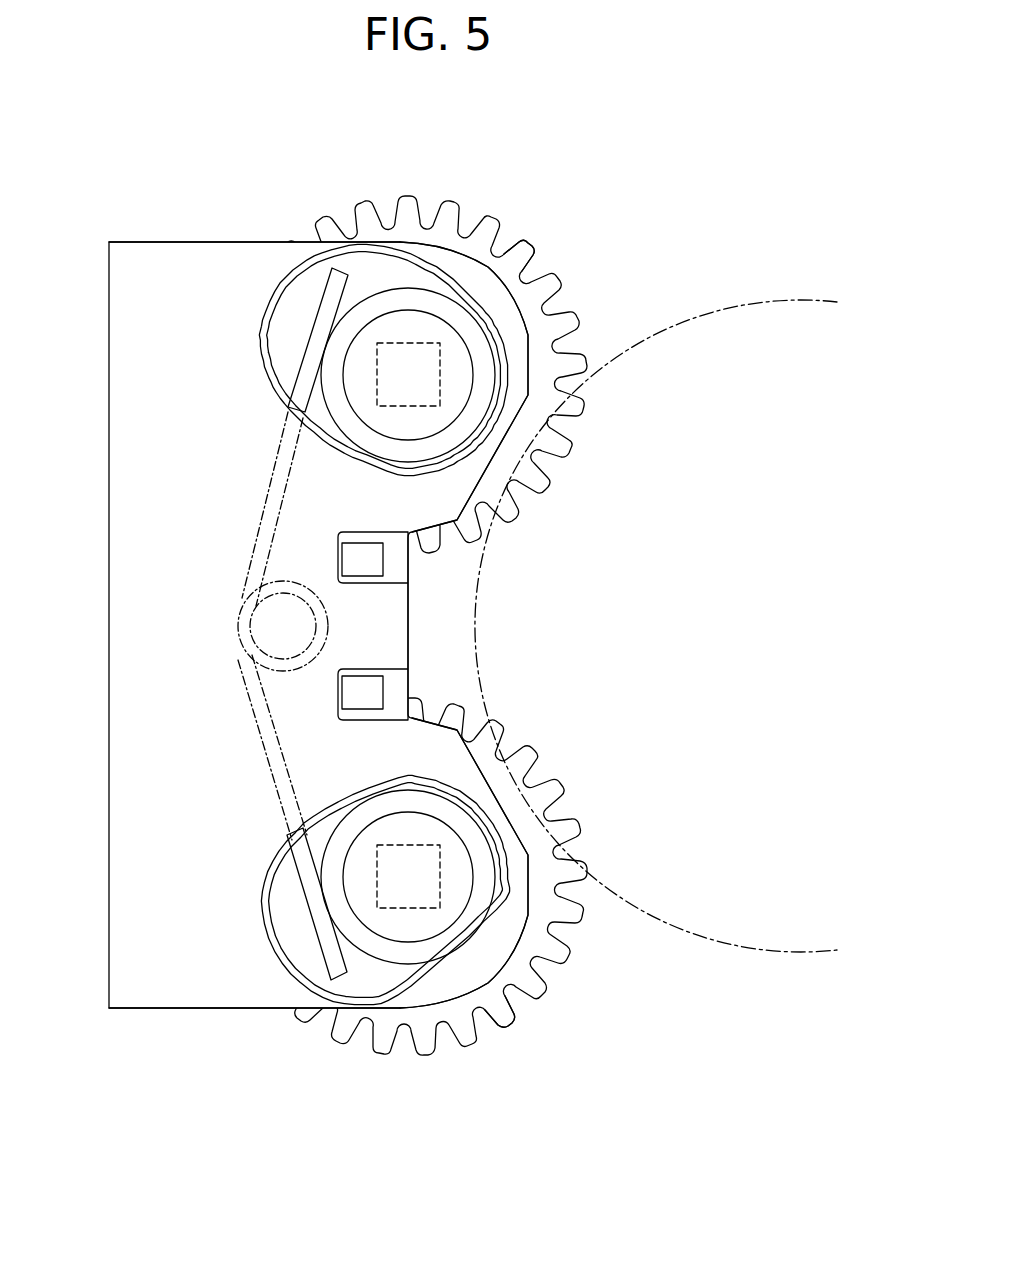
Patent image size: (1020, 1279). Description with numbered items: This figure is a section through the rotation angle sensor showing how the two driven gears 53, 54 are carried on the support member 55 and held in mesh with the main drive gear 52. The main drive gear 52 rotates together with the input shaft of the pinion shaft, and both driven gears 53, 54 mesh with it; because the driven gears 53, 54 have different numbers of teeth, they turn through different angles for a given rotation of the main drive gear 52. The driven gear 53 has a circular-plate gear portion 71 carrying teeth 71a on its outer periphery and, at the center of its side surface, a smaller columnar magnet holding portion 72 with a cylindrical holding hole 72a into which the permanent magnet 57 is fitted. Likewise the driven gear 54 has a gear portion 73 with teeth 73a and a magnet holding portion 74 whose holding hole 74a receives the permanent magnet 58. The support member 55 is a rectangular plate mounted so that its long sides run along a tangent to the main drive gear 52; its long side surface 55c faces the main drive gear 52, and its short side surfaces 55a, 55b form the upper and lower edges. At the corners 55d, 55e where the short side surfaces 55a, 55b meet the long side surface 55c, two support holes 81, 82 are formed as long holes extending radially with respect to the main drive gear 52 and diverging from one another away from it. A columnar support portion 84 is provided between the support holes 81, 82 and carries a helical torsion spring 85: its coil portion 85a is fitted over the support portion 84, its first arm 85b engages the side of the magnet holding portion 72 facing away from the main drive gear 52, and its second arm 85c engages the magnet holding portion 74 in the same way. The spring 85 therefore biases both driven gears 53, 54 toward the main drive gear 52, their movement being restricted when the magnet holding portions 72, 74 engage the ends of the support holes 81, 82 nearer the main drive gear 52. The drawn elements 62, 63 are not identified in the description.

The main drive gear 52 is at (716, 322).
The driven gear 53 is at (432, 922).
The driven gear 54 is at (432, 328).
The support member 55 is at (108, 340).
The short side surface 55a is at (178, 242).
The short side surface 55b is at (176, 1008).
The long side surface 55c is at (414, 601).
The corner 55d is at (490, 280).
The corner 55e is at (542, 967).
The permanent magnet 57 is at (415, 825).
The permanent magnet 58 is at (415, 427).
The shaft 62 is at (440, 880).
The shaft 63 is at (440, 372).
The gear portion 71 is at (469, 1043).
The teeth 71a is at (530, 1027).
The magnet holding portion 72 is at (397, 970).
The holding hole 72a is at (366, 838).
The gear portion 73 is at (482, 212).
The teeth 73a is at (565, 295).
The magnet holding portion 74 is at (396, 280).
The holding hole 74a is at (366, 414).
The support hole 81 is at (281, 931).
The support hole 82 is at (280, 319).
The support portion 84 is at (268, 631).
The helical torsion spring 85 is at (282, 626).
The coil portion 85a is at (328, 620).
The first arm 85b is at (273, 806).
The second arm 85c is at (266, 465).